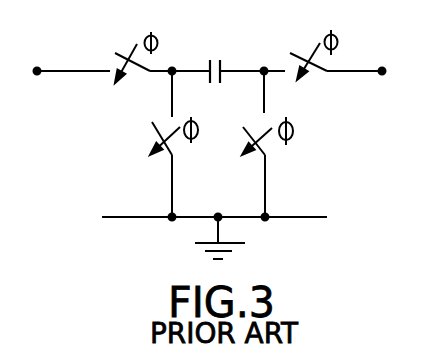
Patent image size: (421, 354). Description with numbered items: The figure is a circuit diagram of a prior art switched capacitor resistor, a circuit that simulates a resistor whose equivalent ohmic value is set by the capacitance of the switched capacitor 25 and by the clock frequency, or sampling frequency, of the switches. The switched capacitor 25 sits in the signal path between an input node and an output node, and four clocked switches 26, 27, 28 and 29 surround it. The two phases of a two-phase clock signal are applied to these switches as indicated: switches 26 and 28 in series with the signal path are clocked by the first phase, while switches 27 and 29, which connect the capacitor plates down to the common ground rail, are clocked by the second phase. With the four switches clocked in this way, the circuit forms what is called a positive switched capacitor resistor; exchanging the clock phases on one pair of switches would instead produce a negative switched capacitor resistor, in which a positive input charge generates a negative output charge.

The switched capacitor 25 is at (212, 60).
The clocked switch 26 is at (113, 53).
The clocked switch 27 is at (152, 123).
The clocked switch 28 is at (292, 53).
The clocked switch 29 is at (243, 128).